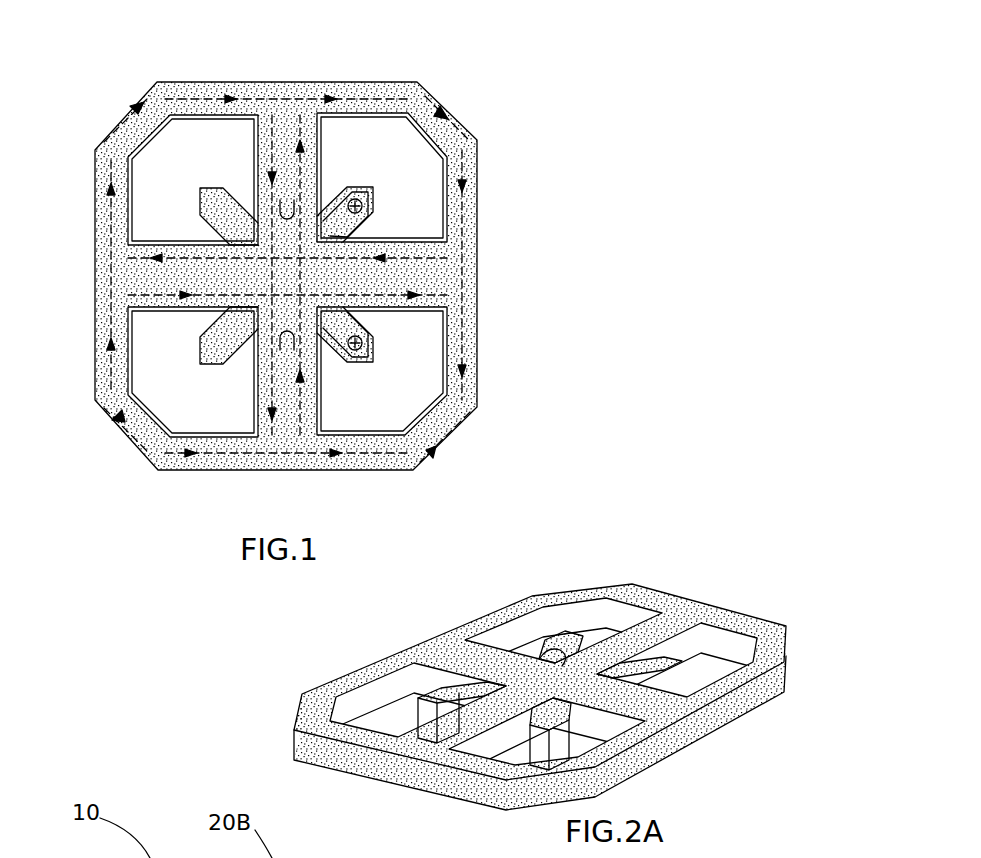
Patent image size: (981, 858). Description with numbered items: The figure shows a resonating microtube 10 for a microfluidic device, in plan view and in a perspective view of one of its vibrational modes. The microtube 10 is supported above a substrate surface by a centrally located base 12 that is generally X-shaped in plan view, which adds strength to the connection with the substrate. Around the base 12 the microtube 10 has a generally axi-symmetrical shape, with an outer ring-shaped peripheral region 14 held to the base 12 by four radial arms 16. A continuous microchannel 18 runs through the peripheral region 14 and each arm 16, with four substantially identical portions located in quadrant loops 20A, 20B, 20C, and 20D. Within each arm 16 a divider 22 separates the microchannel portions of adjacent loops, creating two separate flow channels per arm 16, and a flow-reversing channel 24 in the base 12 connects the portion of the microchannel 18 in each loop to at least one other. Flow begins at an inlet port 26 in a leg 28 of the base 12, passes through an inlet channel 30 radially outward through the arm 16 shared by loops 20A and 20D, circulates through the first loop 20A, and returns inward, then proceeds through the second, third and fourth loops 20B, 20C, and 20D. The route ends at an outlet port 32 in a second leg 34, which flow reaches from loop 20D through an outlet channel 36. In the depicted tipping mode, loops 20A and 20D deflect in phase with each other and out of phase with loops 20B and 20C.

In FIG. 1, the microtube 10 is at (127, 90).
In FIG. 2A, the microtube 10 is at (405, 628).
In FIG. 1, the base 12 is at (232, 192).
In FIG. 2A, the base 12 is at (540, 656).
In FIG. 1, the peripheral region 14 is at (190, 82).
In FIG. 2A, the peripheral region 14 is at (722, 720).
In FIG. 1, the radial arm 16 is at (320, 140).
In FIG. 1, the microchannel 18 is at (110, 118).
In FIG. 1, the first quadrant loop 20A is at (428, 391).
In FIG. 2A, the first quadrant loop 20A is at (300, 706).
In FIG. 1, the second quadrant loop 20B is at (216, 401).
In FIG. 2A, the second quadrant loop 20B is at (585, 590).
In FIG. 1, the third quadrant loop 20C is at (203, 180).
In FIG. 2A, the third quadrant loop 20C is at (780, 668).
In FIG. 1, the fourth quadrant loop 20D is at (428, 169).
In FIG. 2A, the fourth quadrant loop 20D is at (530, 790).
In FIG. 1, the divider 22 is at (281, 80).
In FIG. 1, the flow-reversing channel 24 is at (262, 252).
In FIG. 1, the inlet port 26 is at (372, 333).
In FIG. 1, the leg 28 is at (347, 352).
In FIG. 1, the inlet channel 30 is at (283, 303).
In FIG. 1, the outlet port 32 is at (360, 203).
In FIG. 1, the second leg 34 is at (350, 200).
In FIG. 1, the outlet channel 36 is at (348, 239).